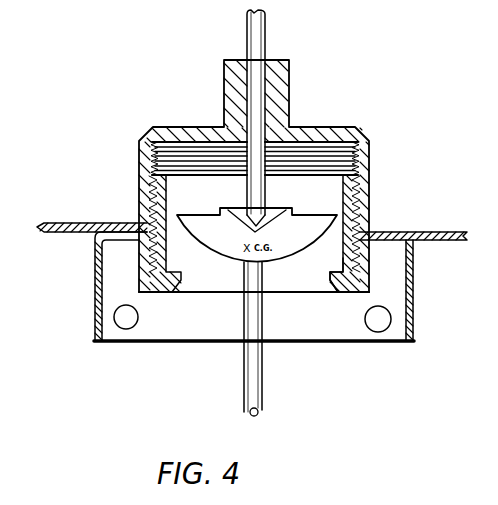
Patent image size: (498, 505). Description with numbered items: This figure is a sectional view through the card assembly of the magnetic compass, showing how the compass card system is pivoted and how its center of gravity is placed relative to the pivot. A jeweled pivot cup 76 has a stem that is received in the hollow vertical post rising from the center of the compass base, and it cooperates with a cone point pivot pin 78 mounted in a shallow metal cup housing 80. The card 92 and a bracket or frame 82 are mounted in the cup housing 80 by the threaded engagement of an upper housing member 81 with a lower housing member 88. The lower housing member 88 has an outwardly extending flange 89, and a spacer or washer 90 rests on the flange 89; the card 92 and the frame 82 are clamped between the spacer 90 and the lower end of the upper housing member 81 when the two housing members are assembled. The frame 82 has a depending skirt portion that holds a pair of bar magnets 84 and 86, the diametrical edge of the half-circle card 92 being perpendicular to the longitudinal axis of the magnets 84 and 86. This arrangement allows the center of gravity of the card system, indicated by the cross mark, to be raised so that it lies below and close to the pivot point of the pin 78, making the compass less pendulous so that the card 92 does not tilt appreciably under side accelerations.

The jeweled pivot cup 76 is at (252, 378).
The cone point pivot pin 78 is at (264, 35).
The cup housing 80 is at (338, 122).
The upper housing member 81 is at (366, 193).
The bracket or frame 82 is at (413, 258).
The bar magnet 84 is at (379, 322).
The bar magnet 86 is at (125, 320).
The lower housing member 88 is at (335, 256).
The flange 89 is at (364, 294).
The spacer or washer 90 is at (366, 266).
The card 92 is at (441, 232).